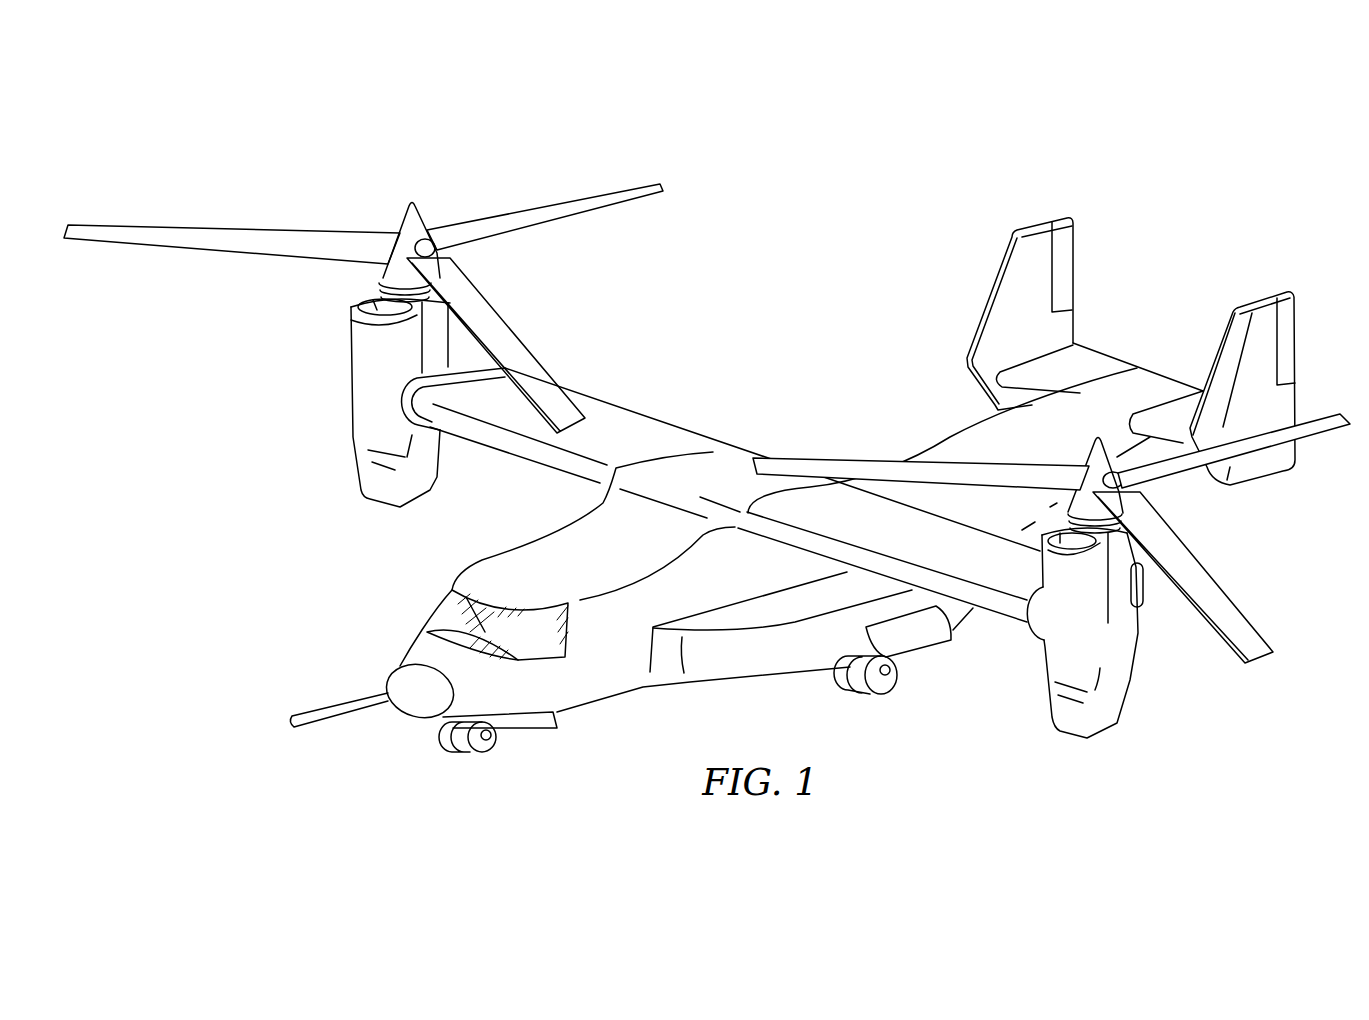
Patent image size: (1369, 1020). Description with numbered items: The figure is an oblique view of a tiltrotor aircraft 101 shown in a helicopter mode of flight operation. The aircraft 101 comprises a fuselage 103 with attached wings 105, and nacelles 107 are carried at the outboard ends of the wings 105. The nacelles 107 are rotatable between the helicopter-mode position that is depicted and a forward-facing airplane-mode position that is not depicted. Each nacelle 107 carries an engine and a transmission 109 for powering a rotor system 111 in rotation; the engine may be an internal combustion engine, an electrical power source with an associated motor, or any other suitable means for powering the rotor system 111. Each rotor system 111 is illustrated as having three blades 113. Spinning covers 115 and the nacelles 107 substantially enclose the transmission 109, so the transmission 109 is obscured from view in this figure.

The tiltrotor aircraft 101 is at (1006, 134).
The fuselage 103 is at (728, 681).
The wings 105 is at (598, 398).
The nacelles 107 is at (355, 362).
The transmissions 109 is at (372, 178).
The rotor systems 111 is at (358, 282).
The blades 113 is at (193, 226).
The spinning covers 115 is at (415, 200).